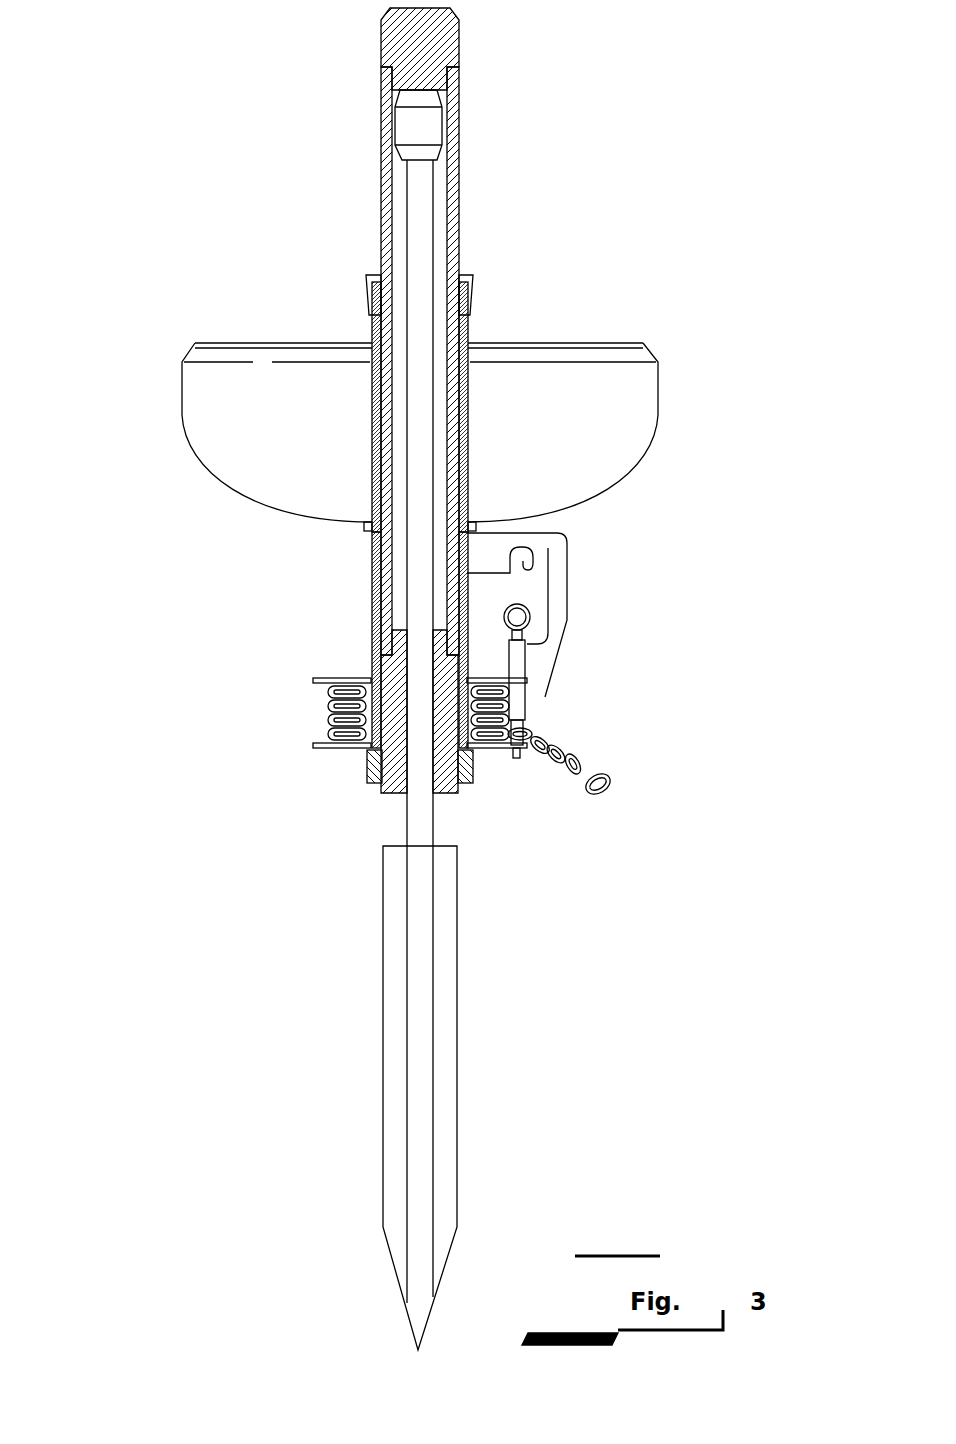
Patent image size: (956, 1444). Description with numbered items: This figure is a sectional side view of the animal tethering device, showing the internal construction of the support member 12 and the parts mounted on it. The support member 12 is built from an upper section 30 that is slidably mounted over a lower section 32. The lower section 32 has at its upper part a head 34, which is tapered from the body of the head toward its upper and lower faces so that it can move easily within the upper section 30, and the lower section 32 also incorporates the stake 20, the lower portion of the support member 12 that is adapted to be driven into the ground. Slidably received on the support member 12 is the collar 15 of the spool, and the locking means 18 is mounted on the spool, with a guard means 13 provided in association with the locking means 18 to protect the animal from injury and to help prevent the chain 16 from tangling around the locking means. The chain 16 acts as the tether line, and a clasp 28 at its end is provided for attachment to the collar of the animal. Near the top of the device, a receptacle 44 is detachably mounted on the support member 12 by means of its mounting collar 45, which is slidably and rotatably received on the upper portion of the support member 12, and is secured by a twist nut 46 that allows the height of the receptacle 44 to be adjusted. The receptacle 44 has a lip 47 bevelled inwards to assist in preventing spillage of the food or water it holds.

The support member 12 is at (376, 106).
The head 34 is at (437, 127).
The twist nut 46 is at (472, 286).
The mounting collar 45 is at (470, 326).
The lip 47 is at (192, 348).
The receptacle 44 is at (222, 463).
The upper section 30 is at (372, 548).
The collar 15 is at (372, 605).
The chain 16 is at (328, 713).
The guard means 13 is at (558, 585).
The locking means 18 is at (533, 710).
The clasp 28 is at (610, 786).
The lower section 32 is at (415, 818).
The stake 20 is at (445, 1035).